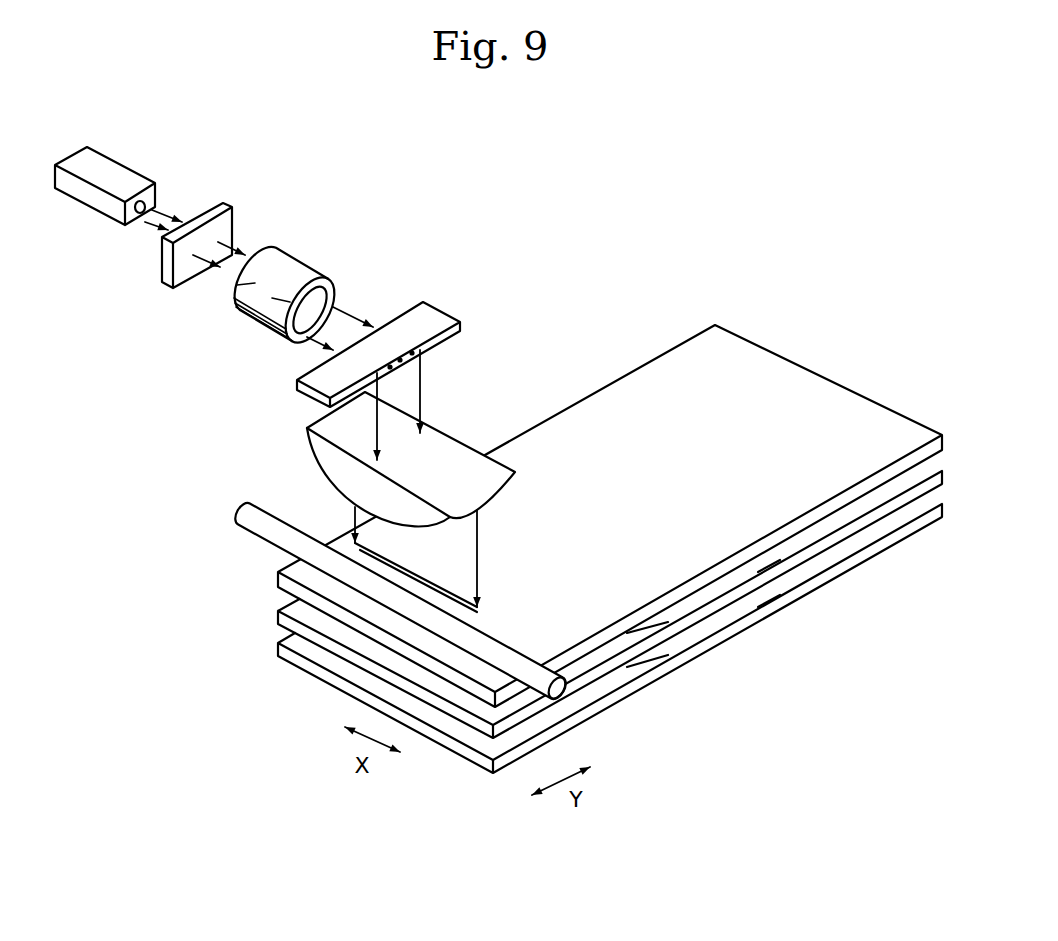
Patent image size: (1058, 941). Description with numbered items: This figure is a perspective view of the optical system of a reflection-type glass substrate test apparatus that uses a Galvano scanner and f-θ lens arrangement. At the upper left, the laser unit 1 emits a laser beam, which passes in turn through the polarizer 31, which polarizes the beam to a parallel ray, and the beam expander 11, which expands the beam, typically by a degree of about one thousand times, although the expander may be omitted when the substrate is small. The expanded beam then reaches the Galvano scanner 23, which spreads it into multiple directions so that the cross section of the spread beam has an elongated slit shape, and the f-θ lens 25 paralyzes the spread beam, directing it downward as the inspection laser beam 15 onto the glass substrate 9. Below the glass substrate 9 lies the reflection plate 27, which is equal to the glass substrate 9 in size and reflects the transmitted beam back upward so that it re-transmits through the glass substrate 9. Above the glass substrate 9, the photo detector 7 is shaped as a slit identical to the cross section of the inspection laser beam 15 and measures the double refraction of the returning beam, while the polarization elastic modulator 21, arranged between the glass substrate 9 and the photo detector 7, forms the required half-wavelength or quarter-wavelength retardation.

The laser unit 1 is at (126, 162).
The polarizer 31 is at (238, 218).
The beam expander 11 is at (300, 273).
The Galvano scanner 23 is at (405, 325).
The f-θ lens 25 is at (418, 446).
The inspection laser beam 15 is at (364, 628).
The photo detector 7 is at (402, 631).
The glass substrate 9 is at (610, 516).
The polarization elastic modulator 21 is at (610, 604).
The reflection plate 27 is at (610, 638).